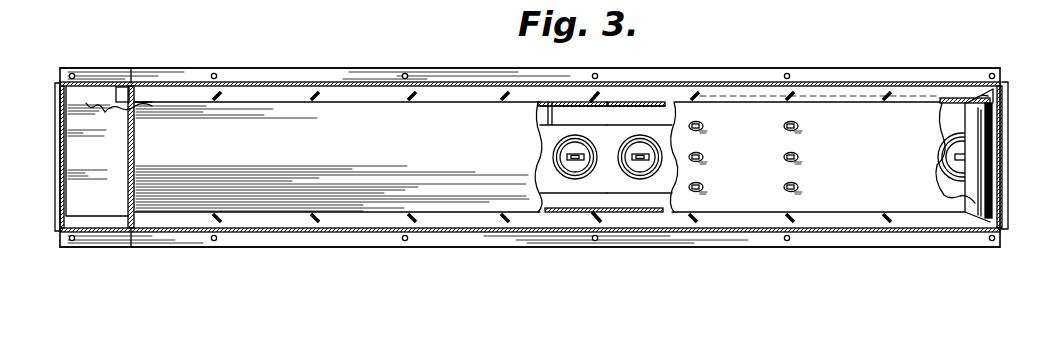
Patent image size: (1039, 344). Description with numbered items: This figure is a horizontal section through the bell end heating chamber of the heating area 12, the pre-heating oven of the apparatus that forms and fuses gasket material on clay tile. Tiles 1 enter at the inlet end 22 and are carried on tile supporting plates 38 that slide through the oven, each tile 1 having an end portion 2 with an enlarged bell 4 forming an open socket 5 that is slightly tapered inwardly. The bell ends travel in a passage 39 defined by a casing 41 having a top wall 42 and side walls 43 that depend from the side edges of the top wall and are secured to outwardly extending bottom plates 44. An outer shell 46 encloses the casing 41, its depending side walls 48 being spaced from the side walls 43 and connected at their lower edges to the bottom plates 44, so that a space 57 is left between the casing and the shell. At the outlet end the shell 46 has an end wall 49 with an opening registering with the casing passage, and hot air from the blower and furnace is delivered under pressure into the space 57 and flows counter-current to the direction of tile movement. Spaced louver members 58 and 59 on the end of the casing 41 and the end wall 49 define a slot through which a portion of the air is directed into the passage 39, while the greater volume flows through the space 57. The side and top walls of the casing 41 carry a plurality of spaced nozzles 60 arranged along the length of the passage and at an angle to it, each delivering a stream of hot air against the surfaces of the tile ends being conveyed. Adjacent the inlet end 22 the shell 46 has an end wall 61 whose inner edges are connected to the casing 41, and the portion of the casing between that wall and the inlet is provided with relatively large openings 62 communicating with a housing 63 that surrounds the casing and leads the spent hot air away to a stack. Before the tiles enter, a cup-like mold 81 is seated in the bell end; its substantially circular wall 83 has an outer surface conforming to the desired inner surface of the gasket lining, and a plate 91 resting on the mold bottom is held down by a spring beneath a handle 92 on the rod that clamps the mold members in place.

The tubular clay or ceramic tile 1 is at (588, 146).
The end portion 2 is at (956, 137).
The enlarged bell 4 is at (663, 139).
The open socket 5 is at (653, 163).
The heating area 12 is at (366, 83).
The inlet end 22 is at (54, 218).
The tile supporting plates 38 is at (627, 126).
The passage 39 is at (552, 126).
The casing 41 is at (270, 100).
The top wall 42 is at (435, 115).
The side walls 43 is at (660, 102).
The bottom plates 44 is at (205, 76).
The outer shell 46 is at (152, 84).
The side walls 48 is at (773, 79).
The end wall 49 is at (1002, 143).
The space 57 is at (917, 93).
The louver member 58 is at (975, 173).
The louver member 59 is at (992, 104).
The nozzles 60 is at (800, 125).
The end wall 61 is at (136, 140).
The openings 62 is at (121, 88).
The housing 63 is at (58, 118).
The mold 81 is at (562, 170).
The circular wall 83 is at (563, 153).
The plate 91 is at (568, 155).
The handle 92 is at (652, 155).